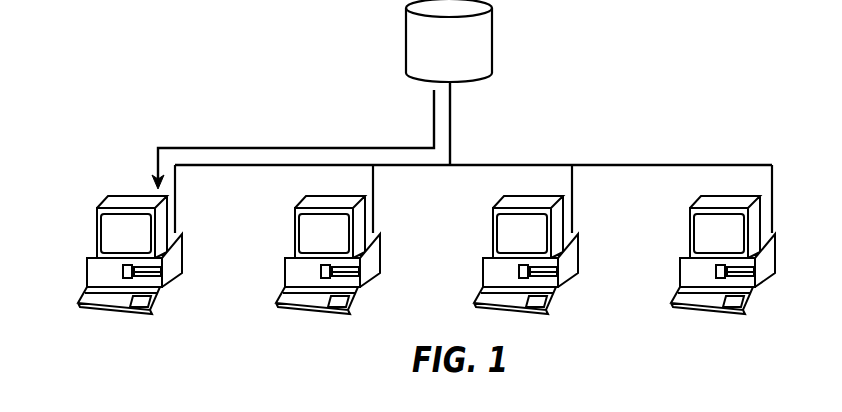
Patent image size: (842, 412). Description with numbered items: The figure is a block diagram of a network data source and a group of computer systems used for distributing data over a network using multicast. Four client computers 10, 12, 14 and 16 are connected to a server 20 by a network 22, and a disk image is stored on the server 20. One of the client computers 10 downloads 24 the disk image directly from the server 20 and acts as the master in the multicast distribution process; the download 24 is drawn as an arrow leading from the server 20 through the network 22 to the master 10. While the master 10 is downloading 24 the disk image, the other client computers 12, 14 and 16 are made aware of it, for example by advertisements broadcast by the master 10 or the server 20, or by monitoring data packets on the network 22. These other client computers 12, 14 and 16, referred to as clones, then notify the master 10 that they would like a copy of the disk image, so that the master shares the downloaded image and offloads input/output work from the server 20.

The client computer 10 is at (90, 272).
The client computer 12 is at (288, 272).
The client computer 14 is at (486, 272).
The client computer 16 is at (683, 272).
The server 20 is at (493, 39).
The network 22 is at (452, 119).
The download 24 is at (206, 147).